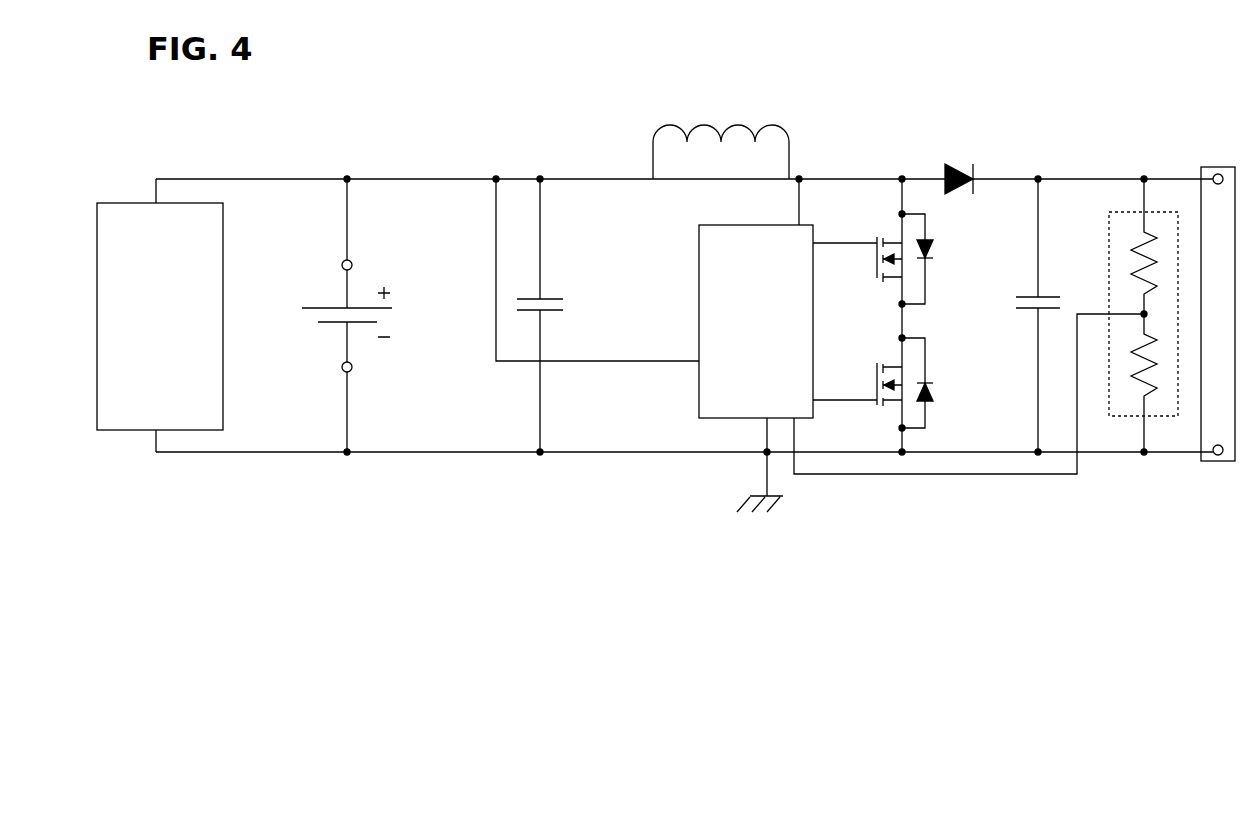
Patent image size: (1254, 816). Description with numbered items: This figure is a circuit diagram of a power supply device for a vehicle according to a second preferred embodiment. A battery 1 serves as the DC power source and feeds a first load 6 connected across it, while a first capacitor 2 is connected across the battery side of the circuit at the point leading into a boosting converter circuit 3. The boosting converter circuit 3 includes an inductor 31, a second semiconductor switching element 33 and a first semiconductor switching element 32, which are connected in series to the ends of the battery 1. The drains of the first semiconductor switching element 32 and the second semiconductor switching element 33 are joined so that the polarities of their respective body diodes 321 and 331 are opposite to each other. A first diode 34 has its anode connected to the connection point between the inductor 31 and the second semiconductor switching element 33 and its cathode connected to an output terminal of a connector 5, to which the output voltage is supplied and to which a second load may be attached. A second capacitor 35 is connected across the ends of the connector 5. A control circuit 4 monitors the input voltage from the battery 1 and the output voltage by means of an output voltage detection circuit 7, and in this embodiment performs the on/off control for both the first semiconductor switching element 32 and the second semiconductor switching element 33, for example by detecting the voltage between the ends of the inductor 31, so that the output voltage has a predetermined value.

The battery 1 is at (322, 337).
The first capacitor 2 is at (553, 315).
The boosting converter circuit 3 is at (661, 86).
The control circuit 4 is at (694, 386).
The connector 5 is at (1223, 159).
The first load 6 is at (137, 197).
The output voltage detection circuit 7 is at (1120, 429).
The inductor 31 is at (721, 138).
The first semiconductor switching element 32 is at (881, 400).
The second semiconductor switching element 33 is at (879, 273).
The first diode 34 is at (959, 192).
The second capacitor 35 is at (1026, 315).
The body diode of first semiconductor switching element 321 is at (939, 383).
The body diode of second semiconductor switching element 331 is at (939, 259).